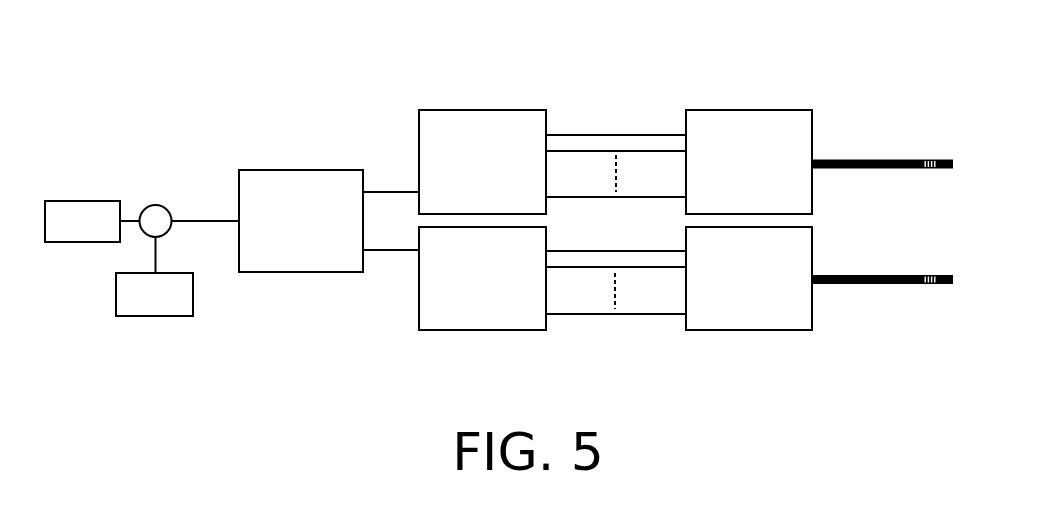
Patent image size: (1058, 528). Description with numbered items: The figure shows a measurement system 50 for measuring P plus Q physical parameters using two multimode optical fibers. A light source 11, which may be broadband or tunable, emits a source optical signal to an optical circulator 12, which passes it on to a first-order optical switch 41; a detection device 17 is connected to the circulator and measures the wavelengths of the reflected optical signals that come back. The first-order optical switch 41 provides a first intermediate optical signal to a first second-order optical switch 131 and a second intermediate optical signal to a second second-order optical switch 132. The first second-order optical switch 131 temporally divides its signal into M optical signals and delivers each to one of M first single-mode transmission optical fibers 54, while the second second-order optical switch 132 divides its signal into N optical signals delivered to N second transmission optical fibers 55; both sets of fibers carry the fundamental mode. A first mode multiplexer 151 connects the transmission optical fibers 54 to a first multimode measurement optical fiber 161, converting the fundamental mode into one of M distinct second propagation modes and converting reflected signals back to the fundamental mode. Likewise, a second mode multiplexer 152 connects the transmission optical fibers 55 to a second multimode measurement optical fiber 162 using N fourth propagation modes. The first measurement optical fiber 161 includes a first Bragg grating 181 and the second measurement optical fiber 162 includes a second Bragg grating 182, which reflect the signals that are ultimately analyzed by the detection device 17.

The measurement system 50 is at (93, 67).
The light source 11 is at (72, 205).
The optical circulator 12 is at (158, 212).
The detection device 17 is at (188, 295).
The first-order optical switch 41 is at (283, 178).
The first second-order optical switch 131 is at (468, 115).
The second second-order optical switch 132 is at (500, 325).
The first single-mode transmission optical fibers 54 is at (590, 130).
The second transmission optical fibers 55 is at (595, 315).
The first mode multiplexer 151 is at (722, 110).
The second mode multiplexer 152 is at (742, 320).
The first multimode measurement optical fiber 161 is at (845, 158).
The second multimode measurement optical fiber 162 is at (843, 285).
The first Bragg grating 181 is at (933, 158).
The second Bragg grating 182 is at (932, 285).